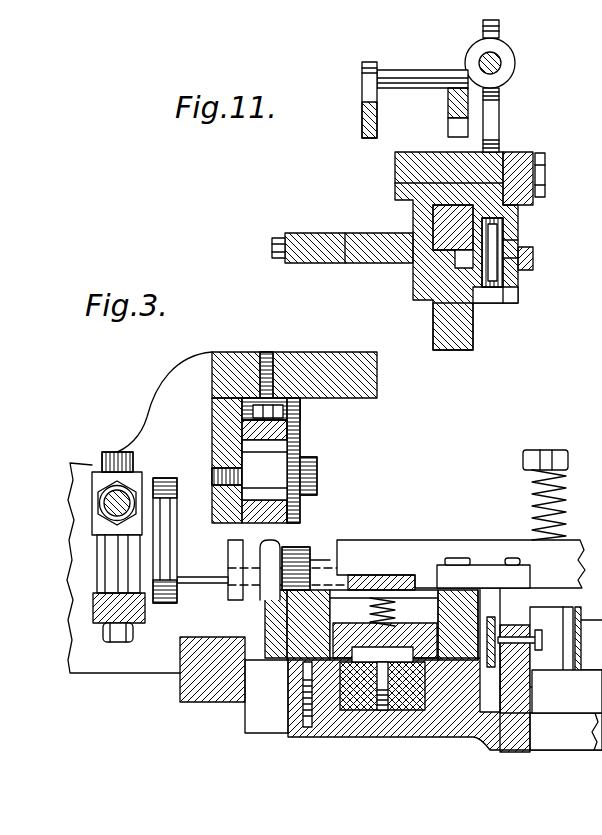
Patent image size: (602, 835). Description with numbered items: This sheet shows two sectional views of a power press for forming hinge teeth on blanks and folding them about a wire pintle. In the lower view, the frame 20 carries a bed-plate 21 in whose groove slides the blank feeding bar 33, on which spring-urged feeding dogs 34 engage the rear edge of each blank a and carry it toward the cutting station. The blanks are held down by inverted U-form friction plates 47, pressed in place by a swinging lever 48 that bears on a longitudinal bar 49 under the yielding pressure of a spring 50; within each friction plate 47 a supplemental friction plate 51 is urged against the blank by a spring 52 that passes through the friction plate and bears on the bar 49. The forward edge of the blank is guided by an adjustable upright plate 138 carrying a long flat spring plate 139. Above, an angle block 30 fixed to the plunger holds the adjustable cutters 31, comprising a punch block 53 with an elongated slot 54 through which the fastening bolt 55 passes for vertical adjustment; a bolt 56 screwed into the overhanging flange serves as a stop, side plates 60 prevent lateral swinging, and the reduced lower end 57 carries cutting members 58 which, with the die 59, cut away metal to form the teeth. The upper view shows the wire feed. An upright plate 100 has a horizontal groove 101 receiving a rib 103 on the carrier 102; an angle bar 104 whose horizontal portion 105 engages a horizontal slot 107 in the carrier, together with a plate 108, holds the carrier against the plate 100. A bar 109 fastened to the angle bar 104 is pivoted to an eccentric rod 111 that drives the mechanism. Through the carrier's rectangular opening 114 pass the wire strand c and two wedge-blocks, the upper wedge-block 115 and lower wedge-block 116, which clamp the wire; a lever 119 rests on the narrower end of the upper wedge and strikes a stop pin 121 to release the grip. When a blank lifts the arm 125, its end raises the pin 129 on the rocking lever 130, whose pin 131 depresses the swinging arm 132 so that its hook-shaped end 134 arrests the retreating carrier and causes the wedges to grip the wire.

In FIG. 3, the frame 20 is at (177, 542).
In FIG. 3, the bed-plate 21 is at (390, 730).
In FIG. 3, the angle block 30 is at (376, 384).
In FIG. 3, the adjustable cutters 31 is at (285, 548).
In FIG. 3, the blank feeding bar 33 is at (365, 690).
In FIG. 3, the feeding dogs 34 is at (305, 722).
In FIG. 3, the friction plates 47 is at (425, 590).
In FIG. 3, the swinging lever 48 is at (375, 550).
In FIG. 3, the bar 49 is at (395, 575).
In FIG. 3, the spring 50 is at (580, 450).
In FIG. 3, the supplemental friction plate 51 is at (410, 640).
In FIG. 3, the spring 52 is at (382, 625).
In FIG. 3, the block 53 is at (302, 433).
In FIG. 3, the elongated slot 54 is at (240, 440).
In FIG. 3, the fastening bolt 55 is at (312, 478).
In FIG. 3, the bolt 56 is at (228, 384).
In FIG. 3, the reduced lower end 57 is at (243, 542).
In FIG. 3, the cutting members 58 is at (283, 544).
In FIG. 3, the die 59 is at (245, 695).
In FIG. 3, the side plates 60 is at (300, 410).
In FIG. 3, the blank a is at (452, 662).
In FIG. 11, the wire strand c is at (505, 300).
In FIG. 11, the upright plate 100 is at (473, 338).
In FIG. 11, the horizontal groove 101 is at (460, 257).
In FIG. 11, the carrier 102 is at (518, 280).
In FIG. 11, the rib 103 is at (455, 268).
In FIG. 11, the angle bar 104 is at (413, 210).
In FIG. 11, the horizontal portion 105 is at (500, 167).
In FIG. 11, the horizontal slot 107 is at (541, 178).
In FIG. 11, the plate 108 is at (533, 260).
In FIG. 11, the bar 109 is at (318, 240).
In FIG. 3, the bar 109 is at (93, 604).
In FIG. 3, the eccentric rod 111 is at (100, 504).
In FIG. 11, the rectangular opening 114 is at (520, 228).
In FIG. 11, the upper wedge-block 115 is at (503, 224).
In FIG. 11, the lower wedge-block 116 is at (518, 250).
In FIG. 11, the lever 119 is at (499, 103).
In FIG. 11, the stop pin 121 is at (499, 60).
In FIG. 3, the arm 125 is at (310, 562).
In FIG. 3, the pin 129 is at (195, 585).
In FIG. 11, the rocking lever 130 is at (362, 124).
In FIG. 3, the rocking lever 130 is at (165, 505).
In FIG. 11, the pin 131 is at (410, 72).
In FIG. 11, the swinging arm 132 is at (448, 100).
In FIG. 11, the hook-shaped end 134 is at (448, 128).
In FIG. 3, the adjustable upright plate 138 is at (515, 698).
In FIG. 3, the spring plate 139 is at (492, 588).